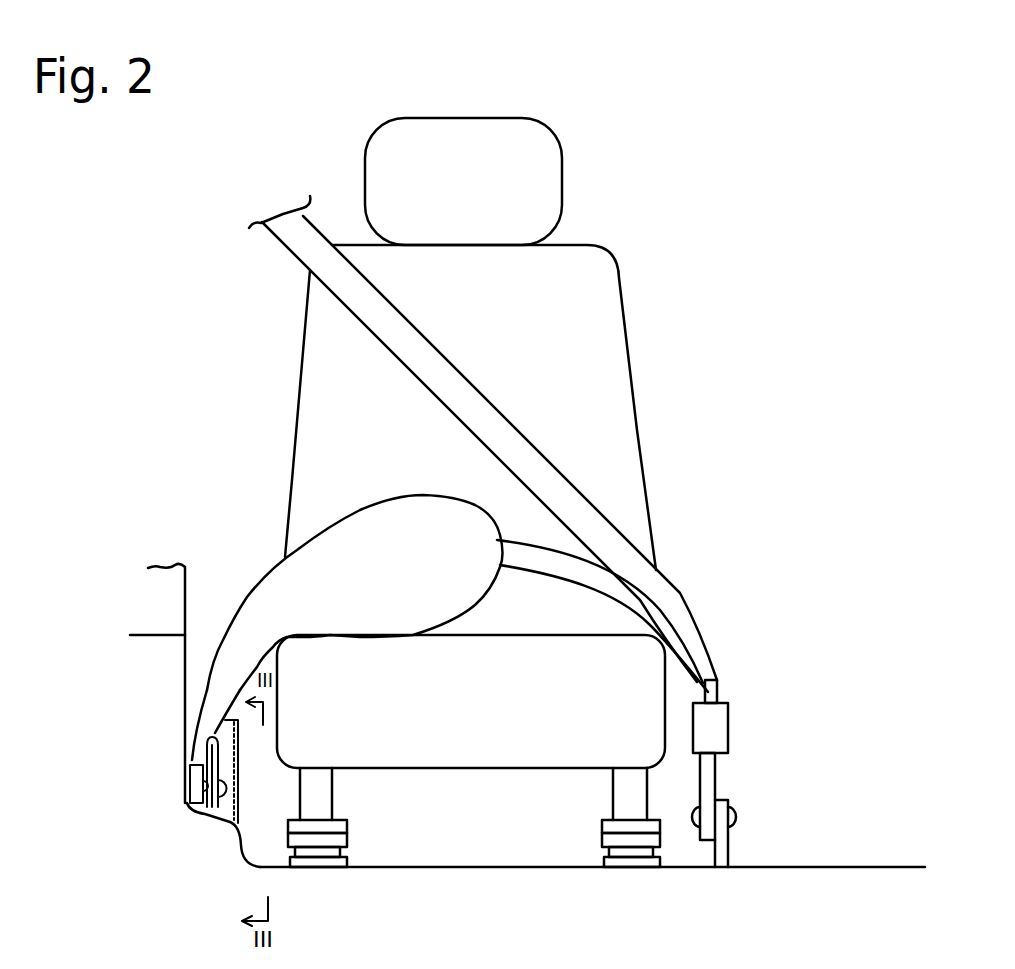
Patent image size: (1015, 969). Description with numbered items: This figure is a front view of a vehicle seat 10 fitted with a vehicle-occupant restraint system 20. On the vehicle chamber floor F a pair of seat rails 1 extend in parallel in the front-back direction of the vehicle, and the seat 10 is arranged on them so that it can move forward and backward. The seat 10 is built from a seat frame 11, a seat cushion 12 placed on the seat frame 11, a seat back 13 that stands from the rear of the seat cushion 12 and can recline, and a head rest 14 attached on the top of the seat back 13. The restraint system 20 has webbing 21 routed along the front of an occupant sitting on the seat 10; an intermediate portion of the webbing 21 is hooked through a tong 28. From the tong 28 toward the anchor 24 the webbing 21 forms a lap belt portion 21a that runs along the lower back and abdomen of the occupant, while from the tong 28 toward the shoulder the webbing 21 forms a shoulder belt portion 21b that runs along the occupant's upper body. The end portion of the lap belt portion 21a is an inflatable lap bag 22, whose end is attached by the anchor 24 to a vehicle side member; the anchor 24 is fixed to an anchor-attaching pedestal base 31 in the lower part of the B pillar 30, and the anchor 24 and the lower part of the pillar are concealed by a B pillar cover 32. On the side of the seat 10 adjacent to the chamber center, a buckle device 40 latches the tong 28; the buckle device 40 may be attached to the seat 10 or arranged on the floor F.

The seat rails 1 is at (372, 837).
The vehicle seat 10 is at (537, 492).
The seat frame 11 is at (328, 790).
The seat cushion 12 is at (478, 750).
The seat back 13 is at (593, 273).
The head rest 14 is at (537, 167).
The vehicle-occupant restraint system 20 is at (306, 675).
The webbing 21 is at (499, 444).
The lap belt portion 21a is at (577, 563).
The shoulder belt portion 21b is at (572, 473).
The inflatable lap bag 22 is at (382, 522).
The anchor 24 is at (237, 822).
The tong 28 is at (703, 717).
The B pillar 30 is at (187, 634).
The anchor-attaching pedestal base 31 is at (187, 787).
The B pillar cover 32 is at (240, 777).
The buckle device 40 is at (764, 773).
The vehicle chamber floor F is at (903, 865).